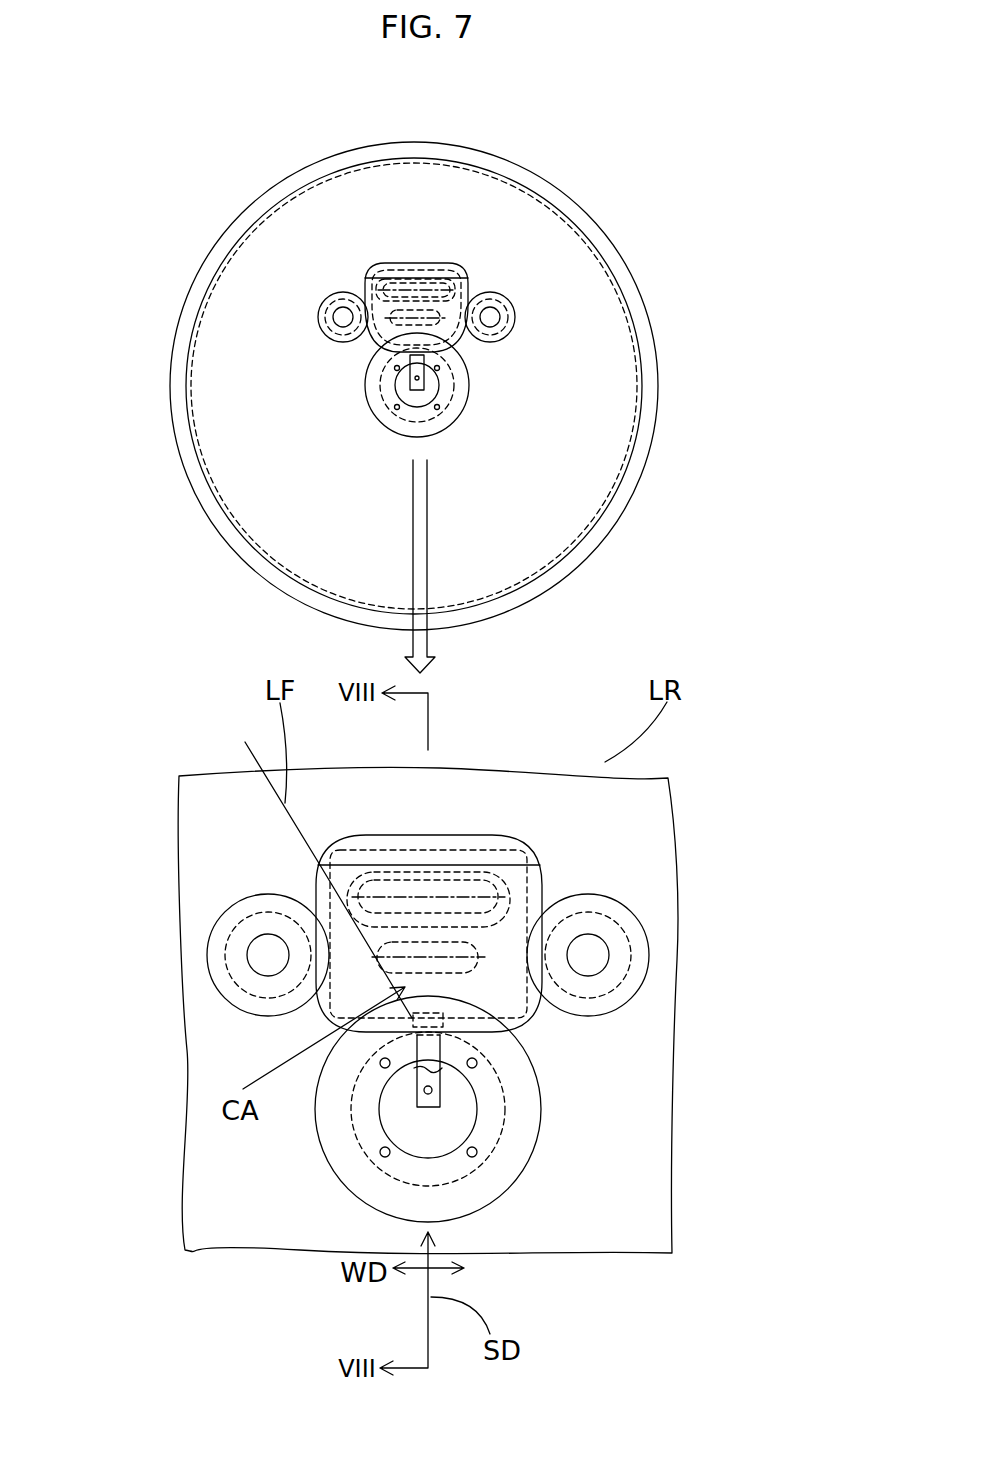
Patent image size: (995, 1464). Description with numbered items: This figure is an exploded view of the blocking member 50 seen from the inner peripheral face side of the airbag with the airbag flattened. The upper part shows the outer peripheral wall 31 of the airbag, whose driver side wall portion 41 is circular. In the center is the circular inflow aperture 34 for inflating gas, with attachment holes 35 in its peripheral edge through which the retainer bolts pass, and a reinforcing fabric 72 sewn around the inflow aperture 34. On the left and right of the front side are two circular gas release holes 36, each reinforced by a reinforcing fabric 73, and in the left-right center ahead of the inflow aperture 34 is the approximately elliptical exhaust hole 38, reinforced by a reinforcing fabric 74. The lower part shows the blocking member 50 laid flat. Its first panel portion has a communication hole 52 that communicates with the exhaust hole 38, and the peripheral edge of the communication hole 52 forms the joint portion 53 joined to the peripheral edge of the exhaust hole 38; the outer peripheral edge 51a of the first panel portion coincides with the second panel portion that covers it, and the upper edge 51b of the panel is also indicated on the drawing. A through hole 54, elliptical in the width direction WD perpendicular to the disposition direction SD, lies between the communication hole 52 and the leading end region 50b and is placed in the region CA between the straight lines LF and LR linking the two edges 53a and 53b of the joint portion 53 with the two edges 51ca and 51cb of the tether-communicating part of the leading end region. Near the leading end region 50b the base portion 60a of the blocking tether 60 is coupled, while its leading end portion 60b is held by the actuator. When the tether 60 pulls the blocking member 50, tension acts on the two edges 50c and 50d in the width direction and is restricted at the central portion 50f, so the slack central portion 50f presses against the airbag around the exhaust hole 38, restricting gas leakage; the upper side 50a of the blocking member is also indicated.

The outer peripheral wall 31 is at (507, 212).
The inflow aperture 34 is at (417, 400).
The attachment holes 35 is at (395, 385).
The gas release holes 36 is at (343, 317).
The exhaust hole 38 is at (428, 278).
The driver side wall portion 41 is at (588, 373).
The blocking member 50 is at (453, 339).
The blocking member outer side 50a is at (447, 1018).
The leading end region 50b is at (395, 1012).
The edge in width direction 50c is at (266, 955).
The edge in width direction 50d is at (610, 956).
The central portion 50f is at (413, 955).
The outer peripheral edge of first panel portion 51a is at (316, 925).
The upper side wall 51b is at (428, 885).
The edge of leading end region 51ca is at (385, 1020).
The edge of leading end region 51cb is at (450, 1030).
The communication hole 52 is at (460, 902).
The joint portion 53 is at (356, 274).
The edge of joint portion 53a is at (352, 916).
The edge of joint portion 53b is at (540, 915).
The through hole 54 is at (400, 990).
The blocking tether 60 is at (100, 375).
The base portion 60a is at (400, 345).
The leading end portion 60b is at (370, 410).
The reinforcing fabric 72 is at (457, 403).
The reinforcing fabric 73 is at (318, 317).
The reinforcing fabric 74 is at (400, 263).